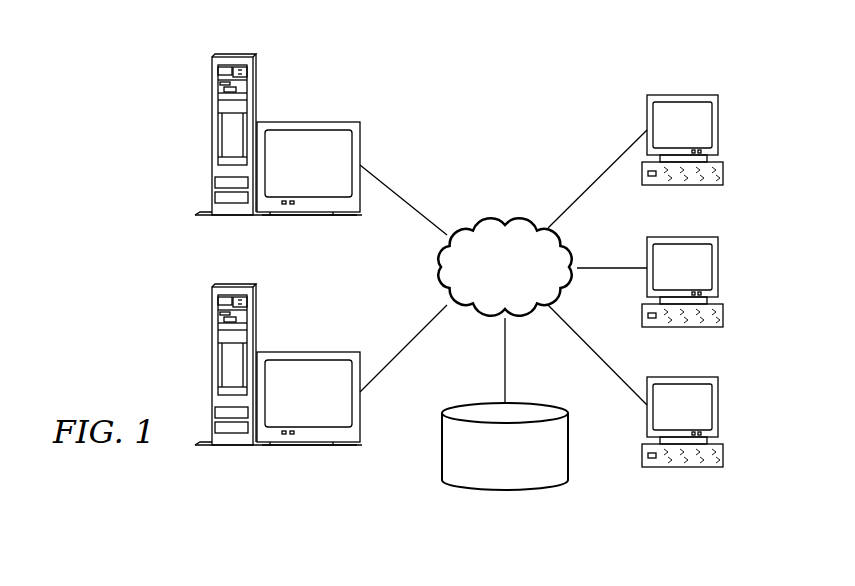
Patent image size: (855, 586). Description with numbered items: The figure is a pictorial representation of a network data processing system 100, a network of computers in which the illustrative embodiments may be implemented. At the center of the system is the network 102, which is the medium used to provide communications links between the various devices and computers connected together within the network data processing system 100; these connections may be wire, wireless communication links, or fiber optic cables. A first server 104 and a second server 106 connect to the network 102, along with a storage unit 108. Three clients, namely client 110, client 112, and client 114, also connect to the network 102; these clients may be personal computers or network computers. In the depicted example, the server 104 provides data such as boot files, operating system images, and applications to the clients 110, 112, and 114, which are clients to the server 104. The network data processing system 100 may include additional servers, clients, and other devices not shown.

The network data processing system 100 is at (106, 191).
The network 102 is at (478, 218).
The server 104 is at (212, 140).
The server 106 is at (212, 370).
The storage unit 108 is at (488, 489).
The client 110 is at (718, 125).
The client 112 is at (718, 268).
The client 114 is at (718, 408).